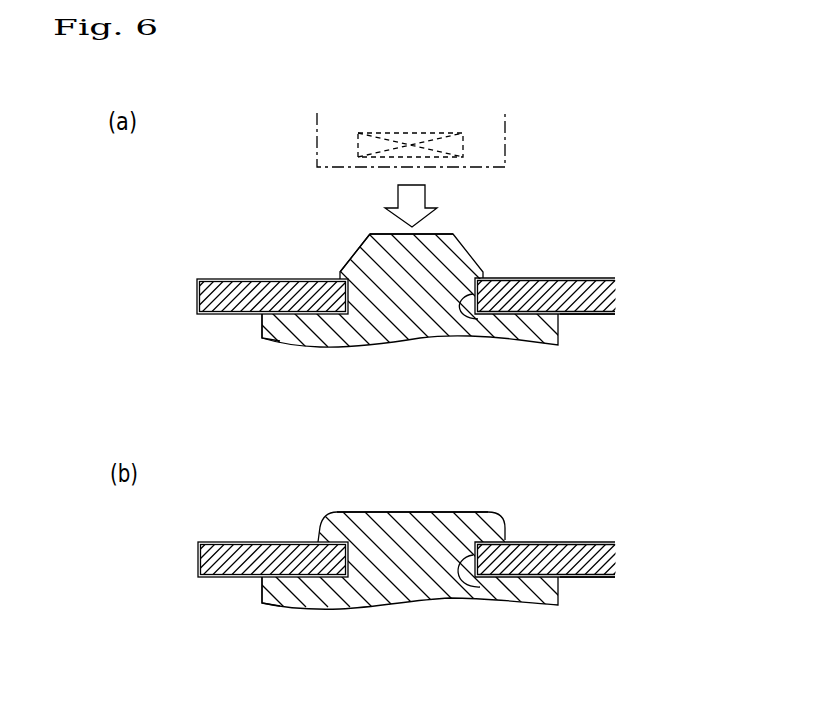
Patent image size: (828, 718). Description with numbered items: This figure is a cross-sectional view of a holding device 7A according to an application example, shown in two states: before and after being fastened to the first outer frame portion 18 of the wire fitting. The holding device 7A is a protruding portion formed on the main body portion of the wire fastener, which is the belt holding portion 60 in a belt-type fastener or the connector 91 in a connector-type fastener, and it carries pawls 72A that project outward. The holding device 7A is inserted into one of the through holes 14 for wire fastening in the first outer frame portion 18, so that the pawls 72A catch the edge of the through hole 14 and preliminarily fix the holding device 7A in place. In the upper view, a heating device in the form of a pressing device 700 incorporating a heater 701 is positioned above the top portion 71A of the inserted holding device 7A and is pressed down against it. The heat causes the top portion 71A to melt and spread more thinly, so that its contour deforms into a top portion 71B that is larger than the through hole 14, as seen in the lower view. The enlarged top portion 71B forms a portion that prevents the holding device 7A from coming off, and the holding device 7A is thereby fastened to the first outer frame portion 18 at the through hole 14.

The pressing device 700 is at (505, 138).
The heater 701 is at (417, 132).
The holding device 7A is at (485, 240).
The top portion 71A is at (383, 235).
The top portion 71B is at (370, 512).
The pawl 72A is at (338, 273).
The through hole for wire fastening 14 is at (530, 290).
The first outer frame portion 18 is at (595, 315).
The belt holding portion 60 is at (195, 473).
The connector 91 is at (262, 333).